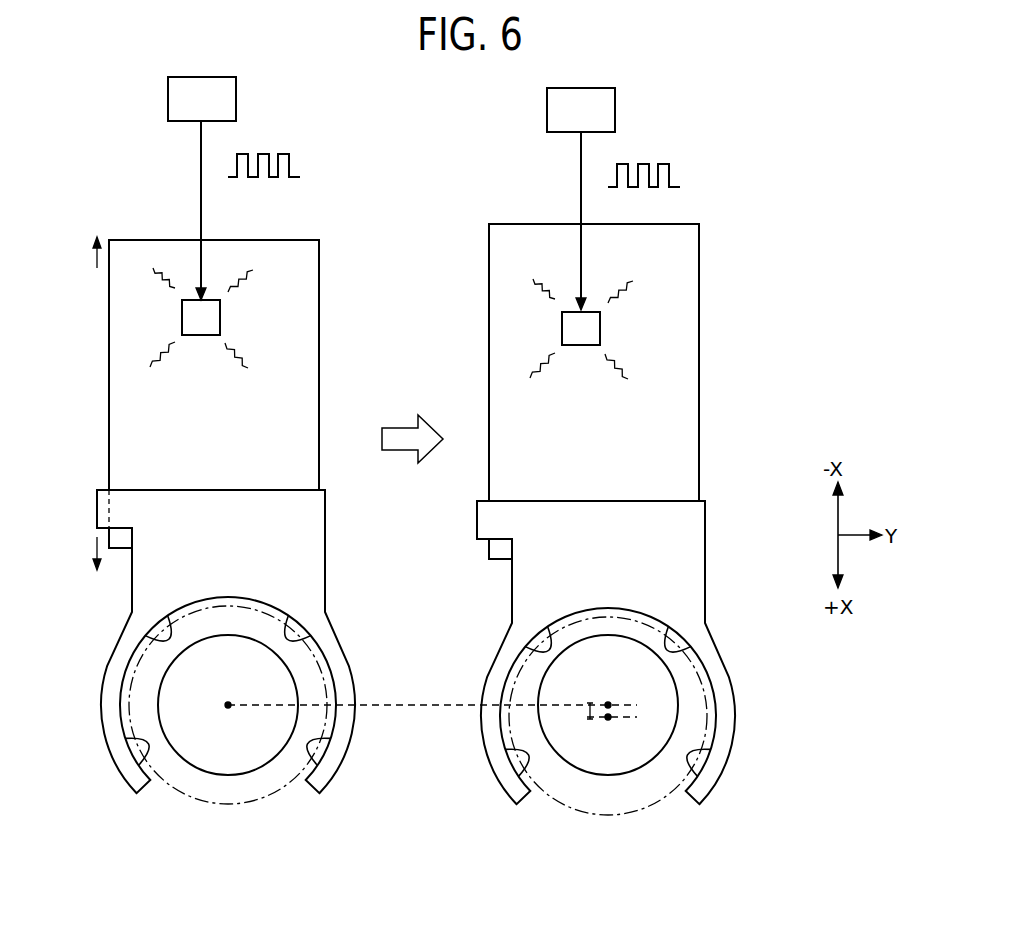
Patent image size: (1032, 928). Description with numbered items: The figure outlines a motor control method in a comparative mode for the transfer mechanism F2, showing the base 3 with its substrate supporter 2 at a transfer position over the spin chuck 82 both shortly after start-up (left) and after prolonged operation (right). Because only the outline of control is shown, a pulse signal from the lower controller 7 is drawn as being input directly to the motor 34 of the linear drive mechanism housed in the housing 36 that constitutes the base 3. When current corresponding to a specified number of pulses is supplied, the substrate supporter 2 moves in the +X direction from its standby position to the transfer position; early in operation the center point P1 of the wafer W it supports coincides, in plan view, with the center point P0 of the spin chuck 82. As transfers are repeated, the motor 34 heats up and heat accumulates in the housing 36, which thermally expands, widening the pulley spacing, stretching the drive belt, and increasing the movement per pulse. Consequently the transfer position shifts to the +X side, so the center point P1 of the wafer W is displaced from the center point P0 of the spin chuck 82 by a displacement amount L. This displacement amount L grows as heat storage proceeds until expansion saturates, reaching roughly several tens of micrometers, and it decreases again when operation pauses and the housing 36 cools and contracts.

The lower controller 7 is at (168, 101).
The base 3 is at (319, 370).
The motor 34 is at (220, 316).
The housing 36 is at (109, 415).
The substrate supporter 2 is at (325, 582).
The spin chuck 82 is at (297, 687).
The wafer W is at (195, 797).
The transfer mechanism F2 is at (340, 138).
The center point of the spin chuck P0 is at (228, 705).
The center point of the wafer P1 is at (608, 717).
The displacement amount L is at (590, 711).